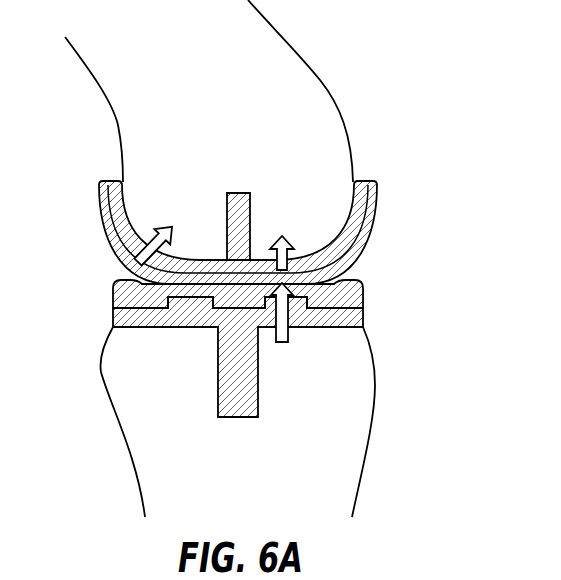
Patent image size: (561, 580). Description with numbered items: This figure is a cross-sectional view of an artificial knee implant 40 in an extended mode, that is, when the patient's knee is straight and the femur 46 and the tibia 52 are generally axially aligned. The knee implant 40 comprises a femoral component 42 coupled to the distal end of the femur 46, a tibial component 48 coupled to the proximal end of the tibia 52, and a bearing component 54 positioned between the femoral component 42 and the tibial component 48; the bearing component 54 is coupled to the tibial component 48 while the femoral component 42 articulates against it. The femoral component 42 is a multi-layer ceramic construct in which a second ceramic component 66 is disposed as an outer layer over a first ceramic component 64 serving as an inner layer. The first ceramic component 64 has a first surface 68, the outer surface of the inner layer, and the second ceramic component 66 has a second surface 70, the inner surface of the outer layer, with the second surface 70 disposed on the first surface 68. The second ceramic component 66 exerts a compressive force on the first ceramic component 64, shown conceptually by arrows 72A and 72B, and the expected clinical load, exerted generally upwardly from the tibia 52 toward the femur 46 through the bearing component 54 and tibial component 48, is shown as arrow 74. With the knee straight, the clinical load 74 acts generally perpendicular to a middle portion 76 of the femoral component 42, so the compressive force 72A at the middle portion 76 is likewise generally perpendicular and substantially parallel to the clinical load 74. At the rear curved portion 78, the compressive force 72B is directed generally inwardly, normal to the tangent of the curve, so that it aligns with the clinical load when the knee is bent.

The knee implant 40 is at (428, 213).
The femoral component 42 is at (229, 213).
The femur 46 is at (300, 70).
The tibial component 48 is at (125, 320).
The tibia 52 is at (355, 444).
The bearing component 54 is at (352, 293).
The first ceramic component 64 is at (112, 221).
The second ceramic component 66 is at (367, 233).
The first surface 68 is at (125, 248).
The second surface 70 is at (360, 223).
The compressive force arrow 72A is at (288, 236).
The compressive force arrow 72B is at (160, 226).
The clinical load arrow 74 is at (290, 340).
The middle portion 76 is at (220, 280).
The rear curved portion 78 is at (148, 271).